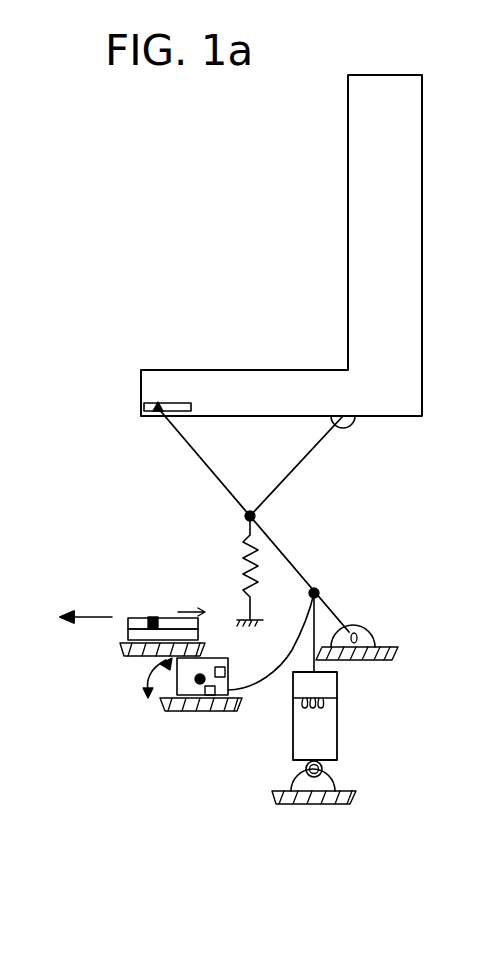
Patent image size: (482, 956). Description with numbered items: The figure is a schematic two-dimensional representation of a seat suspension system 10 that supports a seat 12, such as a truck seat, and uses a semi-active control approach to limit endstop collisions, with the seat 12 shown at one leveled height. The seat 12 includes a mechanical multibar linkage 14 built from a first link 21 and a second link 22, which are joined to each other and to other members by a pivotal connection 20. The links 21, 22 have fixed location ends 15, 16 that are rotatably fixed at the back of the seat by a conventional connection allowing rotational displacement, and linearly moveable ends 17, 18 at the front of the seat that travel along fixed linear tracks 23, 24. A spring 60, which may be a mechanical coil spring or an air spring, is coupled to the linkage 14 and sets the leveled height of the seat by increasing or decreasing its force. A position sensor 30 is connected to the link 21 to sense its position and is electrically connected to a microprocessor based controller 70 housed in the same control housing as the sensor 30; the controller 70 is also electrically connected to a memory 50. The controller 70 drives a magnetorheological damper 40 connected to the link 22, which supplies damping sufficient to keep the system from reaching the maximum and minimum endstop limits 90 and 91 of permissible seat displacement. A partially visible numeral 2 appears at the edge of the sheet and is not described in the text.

The partial numeral (cut off) 2 is at (477, 692).
The suspension system 10 is at (326, 570).
The seat 12 is at (373, 167).
The mechanical multibar linkage 14 is at (210, 539).
The fixed location end 15 is at (355, 424).
The fixed location end 16 is at (352, 641).
The linearly moveable end 17 is at (152, 411).
The linearly moveable end 18 is at (200, 679).
The pivotal connection 20 is at (246, 513).
The first link 21 is at (300, 463).
The second link 22 is at (283, 540).
The track 23 is at (178, 406).
The track 24 is at (128, 633).
The position sensor 30 is at (183, 690).
The magnetorheological damper 40 is at (323, 720).
The memory 50 is at (228, 661).
The spring 60 is at (262, 560).
The controller 70 is at (205, 696).
The endstop limit 90 is at (198, 405).
The endstop limit 91 is at (143, 407).